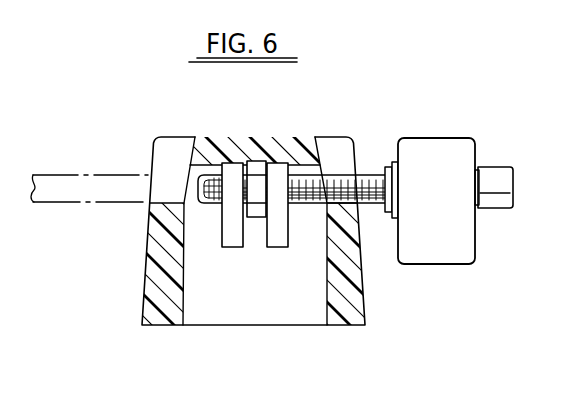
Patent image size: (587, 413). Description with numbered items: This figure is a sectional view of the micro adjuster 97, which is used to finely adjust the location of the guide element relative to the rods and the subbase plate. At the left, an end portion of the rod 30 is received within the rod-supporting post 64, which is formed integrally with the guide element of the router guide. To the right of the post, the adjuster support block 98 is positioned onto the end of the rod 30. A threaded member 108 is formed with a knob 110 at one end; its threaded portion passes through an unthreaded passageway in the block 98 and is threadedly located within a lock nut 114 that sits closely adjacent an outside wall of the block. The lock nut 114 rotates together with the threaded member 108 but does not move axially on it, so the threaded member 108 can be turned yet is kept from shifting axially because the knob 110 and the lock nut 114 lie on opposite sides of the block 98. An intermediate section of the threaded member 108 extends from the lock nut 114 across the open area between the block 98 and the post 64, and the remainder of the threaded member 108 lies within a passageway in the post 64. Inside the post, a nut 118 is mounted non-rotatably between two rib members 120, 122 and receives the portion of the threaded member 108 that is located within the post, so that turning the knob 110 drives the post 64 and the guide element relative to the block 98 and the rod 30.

The rod 30 is at (70, 188).
The rod-supporting post 64 is at (140, 276).
The micro adjuster 97 is at (404, 106).
The adjuster support block 98 is at (451, 134).
The threaded member 108 is at (372, 187).
The knob 110 is at (498, 177).
The lock nut 114 is at (390, 212).
The nut 118 is at (257, 222).
The rib member 120 is at (232, 236).
The rib member 122 is at (278, 237).